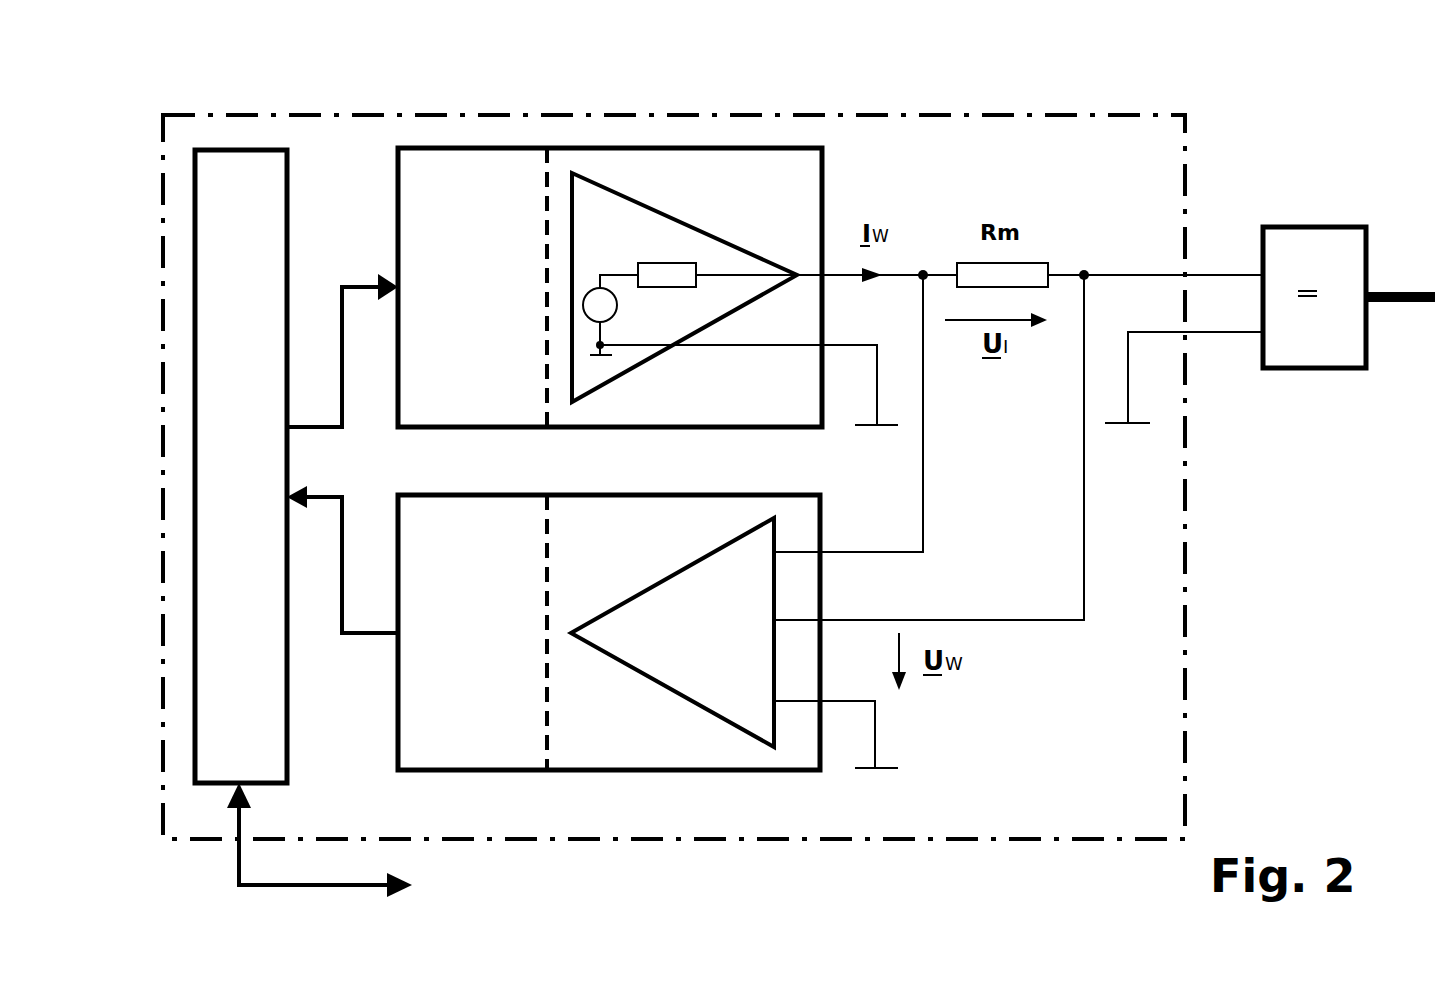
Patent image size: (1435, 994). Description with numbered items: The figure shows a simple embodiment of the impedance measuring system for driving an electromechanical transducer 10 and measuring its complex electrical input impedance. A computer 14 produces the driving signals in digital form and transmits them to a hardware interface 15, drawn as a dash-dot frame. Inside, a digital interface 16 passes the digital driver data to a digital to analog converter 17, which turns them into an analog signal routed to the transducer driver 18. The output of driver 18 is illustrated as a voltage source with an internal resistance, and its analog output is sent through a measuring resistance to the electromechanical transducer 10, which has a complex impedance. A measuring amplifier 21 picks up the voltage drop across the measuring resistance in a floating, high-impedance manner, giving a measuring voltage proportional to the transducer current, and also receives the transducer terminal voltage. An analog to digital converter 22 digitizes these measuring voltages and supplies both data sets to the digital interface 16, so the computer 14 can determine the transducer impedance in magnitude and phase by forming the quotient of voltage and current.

The electromechanical transducer 10 is at (1323, 355).
The computer 14 is at (420, 842).
The hardware interface 15 is at (1058, 774).
The digital interface 16 is at (244, 170).
The digital to analog converter 17 is at (448, 170).
The driver 18 is at (715, 177).
The measuring amplifier 21 is at (647, 747).
The analog to digital converter 22 is at (444, 748).